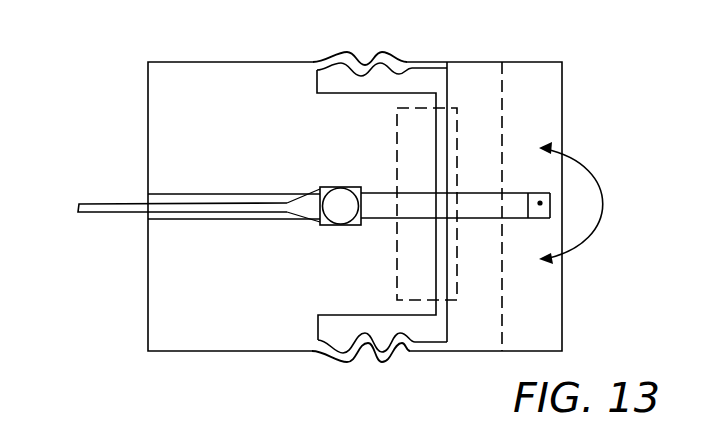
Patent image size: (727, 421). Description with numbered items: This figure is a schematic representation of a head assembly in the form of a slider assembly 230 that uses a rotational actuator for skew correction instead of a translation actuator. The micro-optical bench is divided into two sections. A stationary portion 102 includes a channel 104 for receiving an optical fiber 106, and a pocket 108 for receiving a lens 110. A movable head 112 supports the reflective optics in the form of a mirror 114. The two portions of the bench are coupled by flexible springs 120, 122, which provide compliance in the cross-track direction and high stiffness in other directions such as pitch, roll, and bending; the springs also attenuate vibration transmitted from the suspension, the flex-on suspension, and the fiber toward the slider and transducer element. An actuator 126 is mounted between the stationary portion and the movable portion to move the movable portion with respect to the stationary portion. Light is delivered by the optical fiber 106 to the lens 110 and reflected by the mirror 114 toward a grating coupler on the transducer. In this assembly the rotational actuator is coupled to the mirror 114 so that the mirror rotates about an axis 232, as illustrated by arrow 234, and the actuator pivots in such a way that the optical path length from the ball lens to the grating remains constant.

The stationary portion 102 is at (162, 136).
The channel 104 is at (207, 221).
The optical fiber 106 is at (98, 203).
The pocket 108 is at (358, 186).
The lens 110 is at (340, 221).
The movable head 112 is at (548, 93).
The mirror 114 is at (540, 219).
The flexible spring 120 is at (350, 52).
The flexible spring 122 is at (385, 352).
The actuator 126 is at (388, 278).
The slider assembly 230 is at (592, 58).
The axis 232 is at (540, 201).
The arrow 234 is at (592, 240).